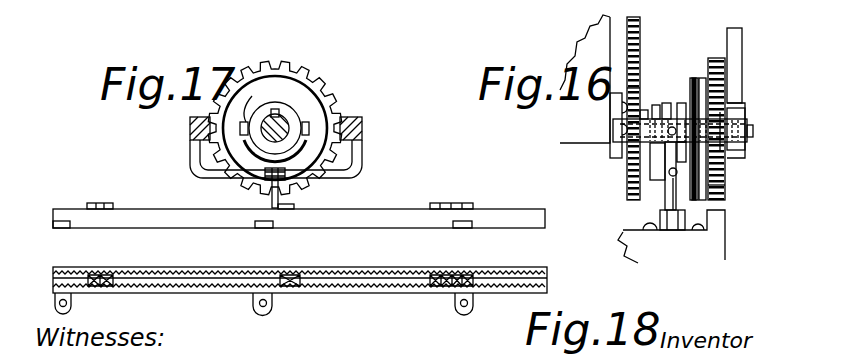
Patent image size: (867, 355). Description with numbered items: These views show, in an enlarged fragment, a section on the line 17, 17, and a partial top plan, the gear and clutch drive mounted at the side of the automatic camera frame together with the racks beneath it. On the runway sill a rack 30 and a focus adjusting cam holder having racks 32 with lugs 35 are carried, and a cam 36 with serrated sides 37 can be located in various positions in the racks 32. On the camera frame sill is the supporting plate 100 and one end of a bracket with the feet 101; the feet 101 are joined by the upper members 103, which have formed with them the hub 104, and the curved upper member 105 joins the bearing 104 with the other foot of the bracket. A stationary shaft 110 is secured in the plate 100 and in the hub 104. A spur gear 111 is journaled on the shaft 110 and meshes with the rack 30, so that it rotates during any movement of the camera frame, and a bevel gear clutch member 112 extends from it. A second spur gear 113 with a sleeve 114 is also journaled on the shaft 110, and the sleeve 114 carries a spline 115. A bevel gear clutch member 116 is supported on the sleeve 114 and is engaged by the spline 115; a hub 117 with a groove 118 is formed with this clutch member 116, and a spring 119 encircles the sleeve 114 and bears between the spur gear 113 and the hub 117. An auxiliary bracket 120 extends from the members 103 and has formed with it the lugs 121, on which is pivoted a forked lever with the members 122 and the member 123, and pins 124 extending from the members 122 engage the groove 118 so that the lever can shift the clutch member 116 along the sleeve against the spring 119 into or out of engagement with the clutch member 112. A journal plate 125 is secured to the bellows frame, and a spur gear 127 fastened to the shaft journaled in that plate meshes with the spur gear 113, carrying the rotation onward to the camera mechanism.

In FIG. 16, the section line 17 is at (678, 104).
In FIG. 16, the rack 30 is at (724, 228).
In FIG. 17, the racks 32 is at (299, 218).
In FIG. 18, the racks 32 is at (172, 264).
In FIG. 16, the racks 32 is at (668, 232).
In FIG. 17, the lugs 35 is at (62, 229).
In FIG. 18, the lugs 35 is at (71, 303).
In FIG. 17, the cam 36 is at (287, 205).
In FIG. 18, the cam 36 is at (106, 275).
In FIG. 18, the serrated sides 37 is at (289, 275).
In FIG. 16, the supporting plate 100 is at (610, 152).
In FIG. 16, the feet 101 is at (610, 109).
In FIG. 17, the upper members 103 is at (190, 130).
In FIG. 16, the upper members 103 is at (719, 146).
In FIG. 16, the hub 104 is at (736, 150).
In FIG. 16, the curved upper member 105 is at (742, 45).
In FIG. 17, the stationary shaft 110 is at (282, 121).
In FIG. 16, the stationary shaft 110 is at (751, 126).
In FIG. 17, the spur gear 111 is at (247, 76).
In FIG. 16, the spur gear 111 is at (726, 186).
In FIG. 16, the bevel gear clutch member 112 is at (716, 60).
In FIG. 16, the spur gear 113 is at (628, 88).
In FIG. 17, the sleeve 114 is at (310, 123).
In FIG. 17, the spline 115 is at (288, 116).
In FIG. 16, the spline 115 is at (656, 105).
In FIG. 16, the bevel gear clutch member 116 is at (702, 78).
In FIG. 17, the hub 117 is at (278, 112).
In FIG. 16, the hub 117 is at (644, 110).
In FIG. 16, the groove 118 is at (694, 78).
In FIG. 16, the spring 119 is at (666, 103).
In FIG. 17, the auxiliary bracket 120 is at (276, 160).
In FIG. 16, the auxiliary bracket 120 is at (650, 166).
In FIG. 16, the lugs 121 is at (666, 185).
In FIG. 17, the forked lever members 122 is at (246, 121).
In FIG. 17, the lever member 123 is at (271, 195).
In FIG. 17, the pins 124 is at (286, 102).
In FIG. 16, the journal plate 125 is at (675, 198).
In FIG. 16, the spur gear 127 is at (638, 30).